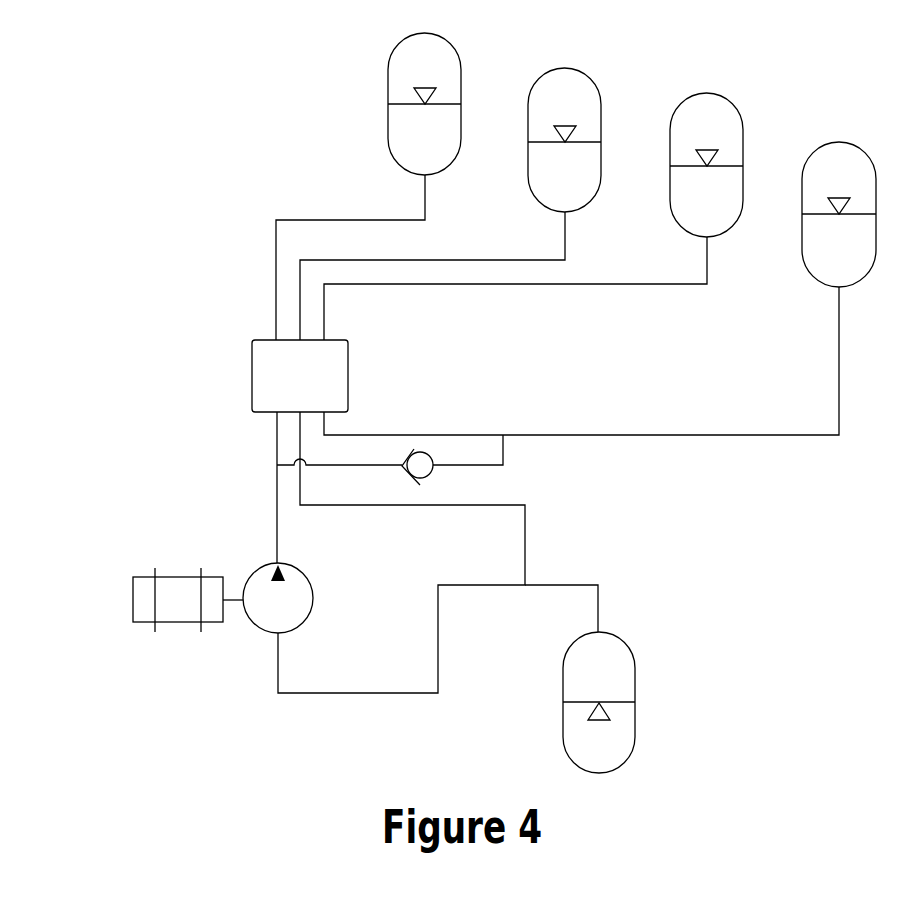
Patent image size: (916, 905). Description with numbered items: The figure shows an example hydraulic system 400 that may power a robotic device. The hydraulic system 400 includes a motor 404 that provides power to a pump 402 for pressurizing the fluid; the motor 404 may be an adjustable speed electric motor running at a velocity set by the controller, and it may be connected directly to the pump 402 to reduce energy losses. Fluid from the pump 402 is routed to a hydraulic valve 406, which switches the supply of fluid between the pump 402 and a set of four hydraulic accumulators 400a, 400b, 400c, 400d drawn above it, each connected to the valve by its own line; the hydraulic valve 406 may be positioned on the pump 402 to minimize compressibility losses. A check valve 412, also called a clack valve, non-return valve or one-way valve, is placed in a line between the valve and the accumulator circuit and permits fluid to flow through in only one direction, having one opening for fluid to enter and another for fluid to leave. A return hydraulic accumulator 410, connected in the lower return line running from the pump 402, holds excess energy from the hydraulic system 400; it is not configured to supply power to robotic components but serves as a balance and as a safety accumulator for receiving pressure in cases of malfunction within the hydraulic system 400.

The hydraulic system 400 is at (236, 165).
The accumulator 400a is at (388, 86).
The accumulator 400b is at (546, 76).
The accumulator 400c is at (688, 102).
The accumulator 400d is at (830, 142).
The pump 402 is at (258, 633).
The motor 404 is at (133, 596).
The hydraulic valve 406 is at (252, 385).
The return hydraulic accumulator 410 is at (563, 683).
The check valve 412 is at (430, 475).